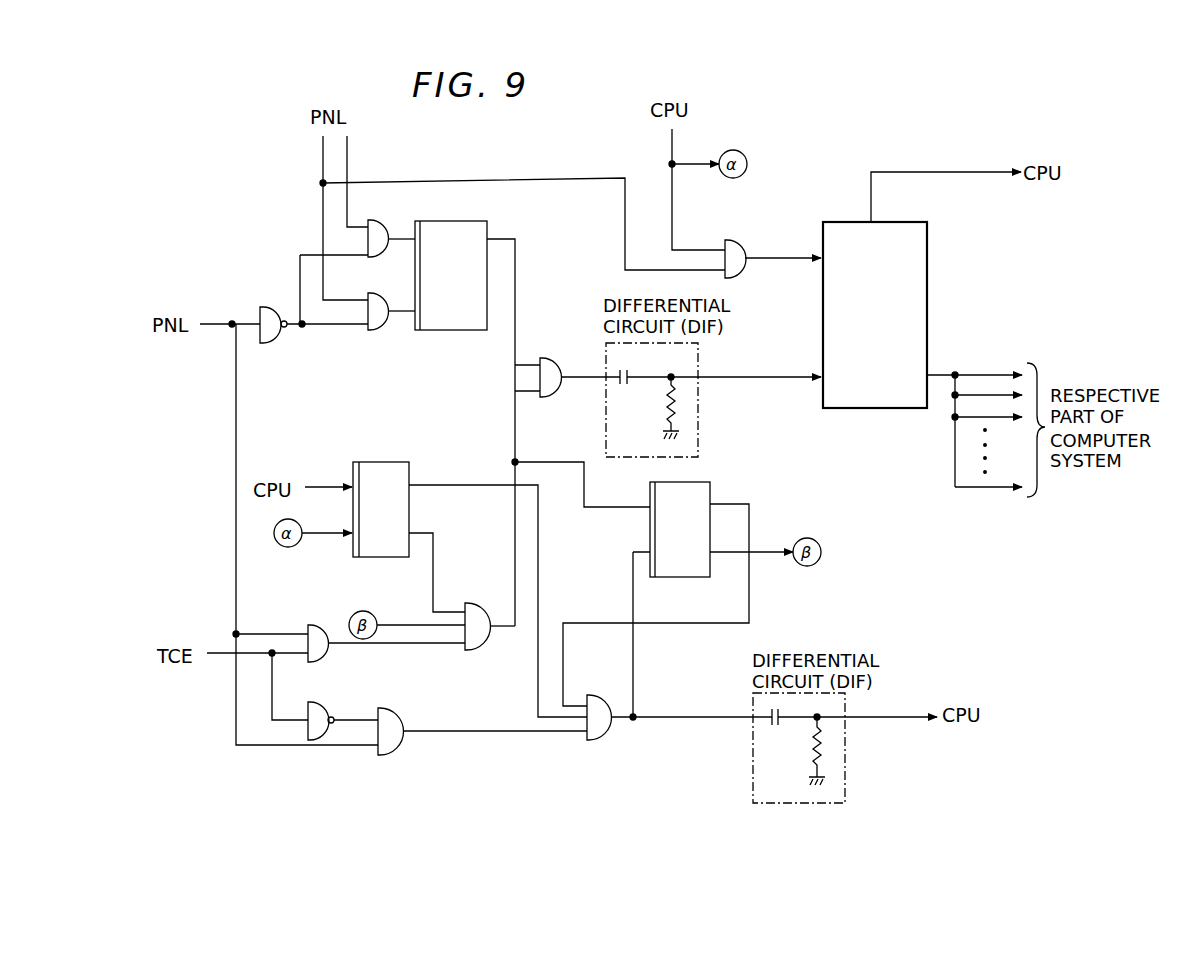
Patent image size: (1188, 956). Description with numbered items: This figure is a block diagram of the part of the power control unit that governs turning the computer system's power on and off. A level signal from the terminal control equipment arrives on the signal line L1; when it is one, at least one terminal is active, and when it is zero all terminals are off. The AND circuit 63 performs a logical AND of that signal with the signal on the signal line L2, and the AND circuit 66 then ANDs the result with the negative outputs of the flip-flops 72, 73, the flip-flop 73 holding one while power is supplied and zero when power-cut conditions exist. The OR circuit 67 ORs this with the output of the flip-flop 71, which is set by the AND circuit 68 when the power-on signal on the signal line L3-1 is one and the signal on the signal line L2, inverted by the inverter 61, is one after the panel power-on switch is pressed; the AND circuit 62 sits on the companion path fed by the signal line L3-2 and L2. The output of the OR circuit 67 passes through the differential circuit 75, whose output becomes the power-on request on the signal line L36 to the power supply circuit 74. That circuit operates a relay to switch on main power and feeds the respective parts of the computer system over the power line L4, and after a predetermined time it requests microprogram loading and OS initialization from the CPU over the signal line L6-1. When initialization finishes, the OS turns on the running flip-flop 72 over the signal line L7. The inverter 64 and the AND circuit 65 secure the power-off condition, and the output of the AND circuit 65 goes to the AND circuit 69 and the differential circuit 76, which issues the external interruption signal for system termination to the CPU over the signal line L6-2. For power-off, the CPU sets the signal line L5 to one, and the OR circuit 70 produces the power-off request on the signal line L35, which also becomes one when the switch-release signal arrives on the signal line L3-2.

The inverter 61 is at (280, 345).
The AND circuit 62 is at (382, 331).
The AND circuit 63 is at (310, 625).
The inverter 64 is at (317, 710).
The AND circuit 65 is at (397, 716).
The AND circuit 66 is at (477, 605).
The OR circuit 67 is at (546, 359).
The AND circuit 68 is at (385, 227).
The AND circuit 69 is at (600, 695).
The OR circuit 70 is at (733, 240).
The flip-flop 71 is at (473, 221).
The flip-flop 72 is at (393, 462).
The flip-flop 73 is at (713, 487).
The power supply circuit 74 is at (928, 237).
The differential circuit 75 is at (702, 440).
The differential circuit 76 is at (845, 767).
The signal line L1 is at (226, 652).
The signal line L2 is at (215, 323).
The signal line L3-1 is at (349, 158).
The signal line L3-2 is at (323, 158).
The signal line L35 is at (775, 257).
The signal line L36 is at (758, 373).
The power line L4 is at (945, 370).
The signal line L5 is at (668, 140).
The signal line L6-1 is at (918, 170).
The signal line L6-2 is at (882, 717).
The signal line L7 is at (323, 483).